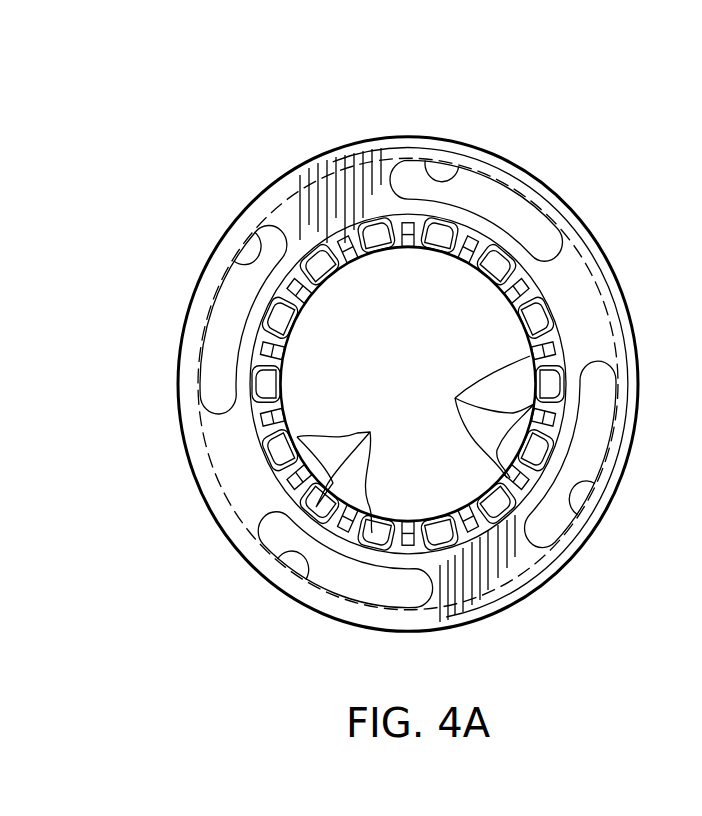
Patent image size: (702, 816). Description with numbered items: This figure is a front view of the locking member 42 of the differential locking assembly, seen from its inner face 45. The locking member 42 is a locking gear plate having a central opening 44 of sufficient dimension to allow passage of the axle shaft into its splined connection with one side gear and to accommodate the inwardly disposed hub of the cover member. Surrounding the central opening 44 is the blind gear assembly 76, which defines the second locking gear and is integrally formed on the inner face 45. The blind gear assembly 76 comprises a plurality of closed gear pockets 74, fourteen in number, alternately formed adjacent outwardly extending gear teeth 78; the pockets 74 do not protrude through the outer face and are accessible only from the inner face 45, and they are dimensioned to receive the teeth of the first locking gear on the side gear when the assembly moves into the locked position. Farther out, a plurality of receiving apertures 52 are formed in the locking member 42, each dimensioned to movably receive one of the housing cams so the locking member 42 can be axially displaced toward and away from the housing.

The locking member 42 is at (593, 189).
The central opening 44 is at (296, 335).
The inner face 45 is at (340, 204).
The receiving apertures 52 is at (422, 165).
The closed gear pockets 74 is at (370, 432).
The blind gear assembly 76 is at (572, 314).
The gear teeth 78 is at (455, 398).